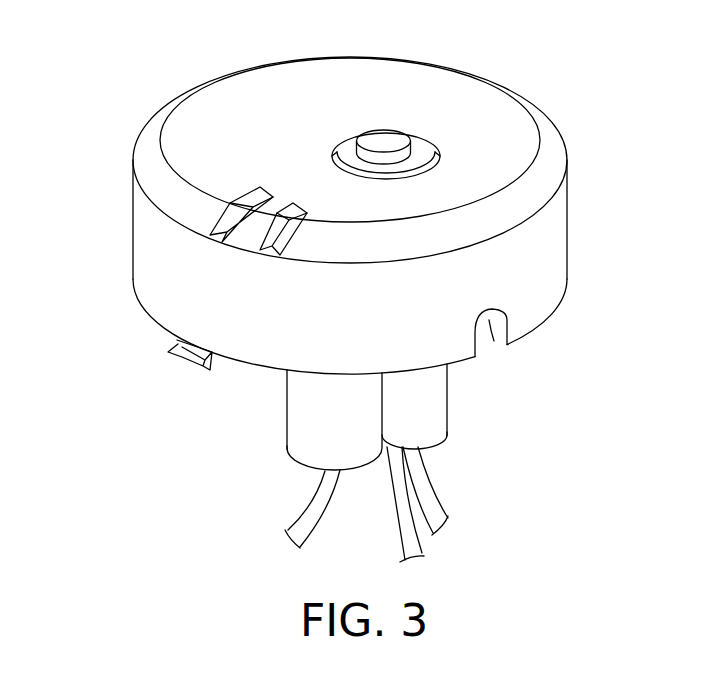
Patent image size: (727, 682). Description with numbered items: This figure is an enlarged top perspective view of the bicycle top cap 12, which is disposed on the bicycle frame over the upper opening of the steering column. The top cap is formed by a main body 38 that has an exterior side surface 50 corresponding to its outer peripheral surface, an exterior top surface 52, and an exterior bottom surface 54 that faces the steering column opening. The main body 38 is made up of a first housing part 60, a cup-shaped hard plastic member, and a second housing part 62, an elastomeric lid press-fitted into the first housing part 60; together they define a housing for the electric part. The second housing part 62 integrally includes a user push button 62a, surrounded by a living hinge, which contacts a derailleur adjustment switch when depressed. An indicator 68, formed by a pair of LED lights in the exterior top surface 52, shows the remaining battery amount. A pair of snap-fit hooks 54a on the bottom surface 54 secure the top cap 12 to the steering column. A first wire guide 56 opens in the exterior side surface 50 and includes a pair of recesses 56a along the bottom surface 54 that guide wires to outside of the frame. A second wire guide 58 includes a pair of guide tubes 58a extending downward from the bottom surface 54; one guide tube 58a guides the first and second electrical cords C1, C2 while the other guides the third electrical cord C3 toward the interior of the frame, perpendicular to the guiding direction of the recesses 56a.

The bicycle top cap 12 is at (224, 77).
The main body 38 is at (75, 106).
The exterior side surface 50 is at (540, 245).
The exterior top surface 52 is at (420, 98).
The exterior bottom surface 54 is at (552, 318).
The snap-fit hooks 54a is at (186, 361).
The first wire guide 56 is at (483, 356).
The recesses 56a is at (493, 341).
The second wire guide 58 is at (287, 410).
The guide tubes 58a is at (287, 440).
The first housing part 60 is at (148, 227).
The second housing part 62 is at (178, 145).
The user push button 62a is at (381, 138).
The indicator 68 is at (272, 250).
The first electrical cord C1 is at (432, 494).
The second electrical cord C2 is at (388, 512).
The third electrical cord C3 is at (310, 510).